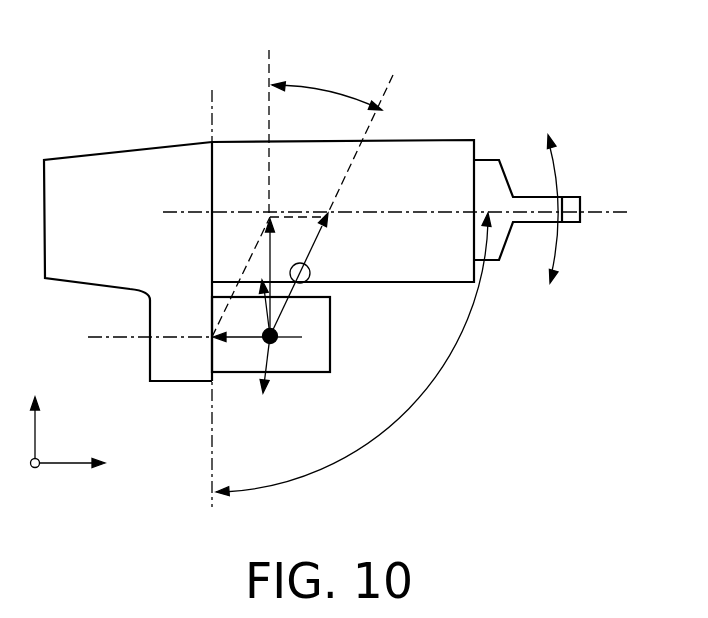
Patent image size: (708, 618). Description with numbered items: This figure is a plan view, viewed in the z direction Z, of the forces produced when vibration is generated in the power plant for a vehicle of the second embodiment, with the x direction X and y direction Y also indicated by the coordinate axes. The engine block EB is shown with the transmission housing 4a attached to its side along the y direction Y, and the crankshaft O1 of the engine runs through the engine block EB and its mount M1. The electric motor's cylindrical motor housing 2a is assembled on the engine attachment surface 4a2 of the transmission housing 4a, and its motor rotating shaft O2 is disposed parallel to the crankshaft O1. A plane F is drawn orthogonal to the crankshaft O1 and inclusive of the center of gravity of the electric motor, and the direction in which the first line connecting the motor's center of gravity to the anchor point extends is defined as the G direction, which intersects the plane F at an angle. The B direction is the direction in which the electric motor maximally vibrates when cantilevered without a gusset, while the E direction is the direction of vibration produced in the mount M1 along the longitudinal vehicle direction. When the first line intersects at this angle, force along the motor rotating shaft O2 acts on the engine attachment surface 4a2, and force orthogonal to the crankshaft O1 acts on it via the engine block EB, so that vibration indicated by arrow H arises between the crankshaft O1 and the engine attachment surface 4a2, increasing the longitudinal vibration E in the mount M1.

The transmission housing 4a is at (112, 175).
The engine attachment surface 4a2 is at (212, 453).
The motor housing 2a is at (330, 352).
The engine block EB is at (425, 155).
The mount M1 is at (488, 170).
The crankshaft O1 is at (413, 211).
The motor rotating shaft O2 is at (176, 339).
The plane F is at (268, 176).
The G direction G is at (341, 192).
The B direction B is at (274, 371).
The E direction E is at (560, 203).
The arrow H is at (353, 354).
The x direction X is at (35, 412).
The y direction Y is at (82, 463).
The z direction Z is at (23, 466).